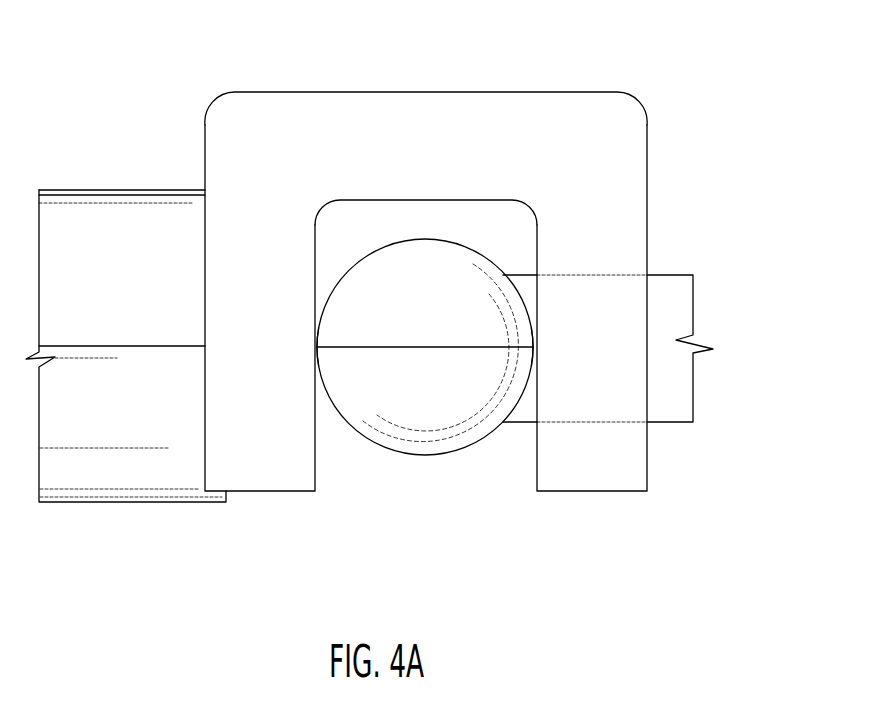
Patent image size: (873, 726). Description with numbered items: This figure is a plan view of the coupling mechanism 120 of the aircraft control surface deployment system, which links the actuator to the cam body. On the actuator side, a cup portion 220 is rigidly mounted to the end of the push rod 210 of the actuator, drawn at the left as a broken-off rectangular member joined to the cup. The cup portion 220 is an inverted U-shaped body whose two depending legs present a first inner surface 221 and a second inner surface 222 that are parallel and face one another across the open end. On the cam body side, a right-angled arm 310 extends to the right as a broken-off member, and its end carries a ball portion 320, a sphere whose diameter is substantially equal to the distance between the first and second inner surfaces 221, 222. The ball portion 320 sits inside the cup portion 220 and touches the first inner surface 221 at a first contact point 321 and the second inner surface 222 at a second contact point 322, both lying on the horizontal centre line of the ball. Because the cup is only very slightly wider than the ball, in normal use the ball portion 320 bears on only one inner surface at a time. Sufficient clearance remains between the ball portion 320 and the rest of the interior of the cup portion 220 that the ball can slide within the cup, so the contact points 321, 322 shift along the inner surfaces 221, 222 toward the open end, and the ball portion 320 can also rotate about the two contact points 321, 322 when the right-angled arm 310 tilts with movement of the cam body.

The coupling mechanism 120 is at (688, 129).
The push rod 210 is at (105, 494).
The cup portion 220 is at (426, 276).
The first inner surface 221 is at (316, 460).
The second inner surface 222 is at (537, 460).
The right-angled arm 310 is at (680, 375).
The ball portion 320 is at (408, 299).
The first contact point 321 is at (316, 347).
The second contact point 322 is at (534, 346).